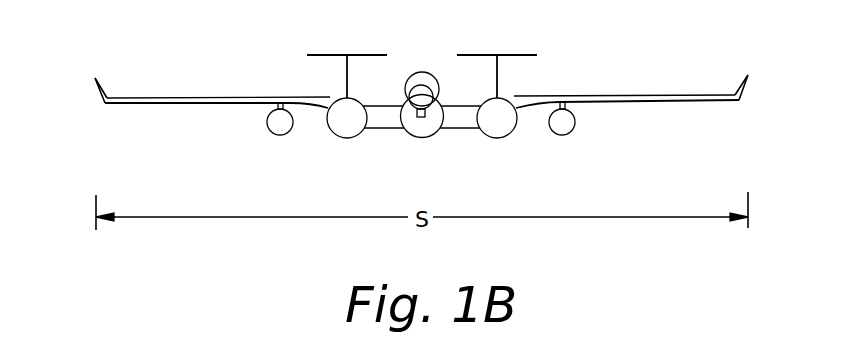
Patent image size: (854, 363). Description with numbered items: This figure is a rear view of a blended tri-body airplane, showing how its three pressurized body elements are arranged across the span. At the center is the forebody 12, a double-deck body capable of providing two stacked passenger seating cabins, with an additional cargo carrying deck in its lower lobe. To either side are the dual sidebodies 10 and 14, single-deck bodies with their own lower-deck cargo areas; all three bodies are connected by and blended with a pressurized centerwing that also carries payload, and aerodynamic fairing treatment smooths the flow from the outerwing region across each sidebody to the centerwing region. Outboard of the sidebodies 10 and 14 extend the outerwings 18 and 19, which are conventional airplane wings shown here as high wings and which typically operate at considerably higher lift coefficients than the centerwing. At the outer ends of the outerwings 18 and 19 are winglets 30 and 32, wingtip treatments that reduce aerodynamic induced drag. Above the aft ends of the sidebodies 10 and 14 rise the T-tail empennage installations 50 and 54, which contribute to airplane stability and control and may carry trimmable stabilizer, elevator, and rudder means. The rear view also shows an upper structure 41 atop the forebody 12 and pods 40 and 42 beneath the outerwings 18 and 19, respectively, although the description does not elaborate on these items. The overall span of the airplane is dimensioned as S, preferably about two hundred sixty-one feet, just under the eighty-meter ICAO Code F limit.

The sidebody 10 is at (340, 127).
The forebody 12 is at (424, 129).
The sidebody 14 is at (500, 127).
The outerwing 18 is at (182, 105).
The right wing 19 is at (659, 102).
The winglet 30 is at (108, 90).
The winglet 32 is at (748, 82).
The left wing pod 40 is at (281, 130).
The upper fuselage 41 is at (423, 77).
The right wing pod 42 is at (567, 125).
The T-tail empennage installation 50 is at (327, 54).
The T-tail empennage installation 54 is at (518, 54).